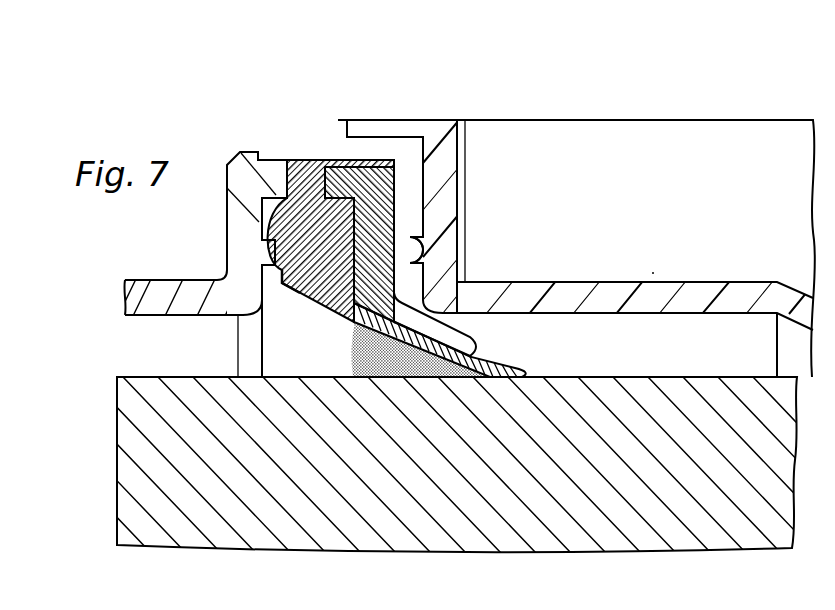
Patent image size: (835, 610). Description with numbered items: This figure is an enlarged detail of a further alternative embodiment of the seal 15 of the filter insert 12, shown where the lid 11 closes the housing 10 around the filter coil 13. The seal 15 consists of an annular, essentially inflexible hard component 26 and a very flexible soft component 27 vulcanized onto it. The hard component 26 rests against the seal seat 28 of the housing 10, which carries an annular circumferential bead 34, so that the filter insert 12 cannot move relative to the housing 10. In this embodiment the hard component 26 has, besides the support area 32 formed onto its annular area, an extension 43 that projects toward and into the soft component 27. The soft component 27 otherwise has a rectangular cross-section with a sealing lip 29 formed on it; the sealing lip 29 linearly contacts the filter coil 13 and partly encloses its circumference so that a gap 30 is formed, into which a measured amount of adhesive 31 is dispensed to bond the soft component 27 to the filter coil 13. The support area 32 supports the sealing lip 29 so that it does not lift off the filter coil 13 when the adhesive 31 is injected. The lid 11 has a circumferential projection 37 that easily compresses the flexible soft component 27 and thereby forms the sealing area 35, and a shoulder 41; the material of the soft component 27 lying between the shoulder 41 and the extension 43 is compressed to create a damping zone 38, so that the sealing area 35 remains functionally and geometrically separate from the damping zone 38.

The housing 10 is at (702, 296).
The lid 11 is at (143, 290).
The filter insert 12 is at (102, 489).
The filter coil 13 is at (138, 413).
The seal 15 is at (395, 199).
The hard component 26 is at (380, 175).
The soft component 27 is at (313, 160).
The seal seat 28 is at (430, 187).
The sealing lip 29 is at (513, 370).
The gap 30 is at (340, 353).
The adhesive 31 is at (388, 382).
The support area 32 is at (457, 340).
The bead 34 is at (405, 250).
The sealing area 35 is at (280, 296).
The projection 37 is at (273, 250).
The damping zone 38 is at (232, 227).
The shoulder 41 is at (277, 175).
The extension 43 is at (355, 162).